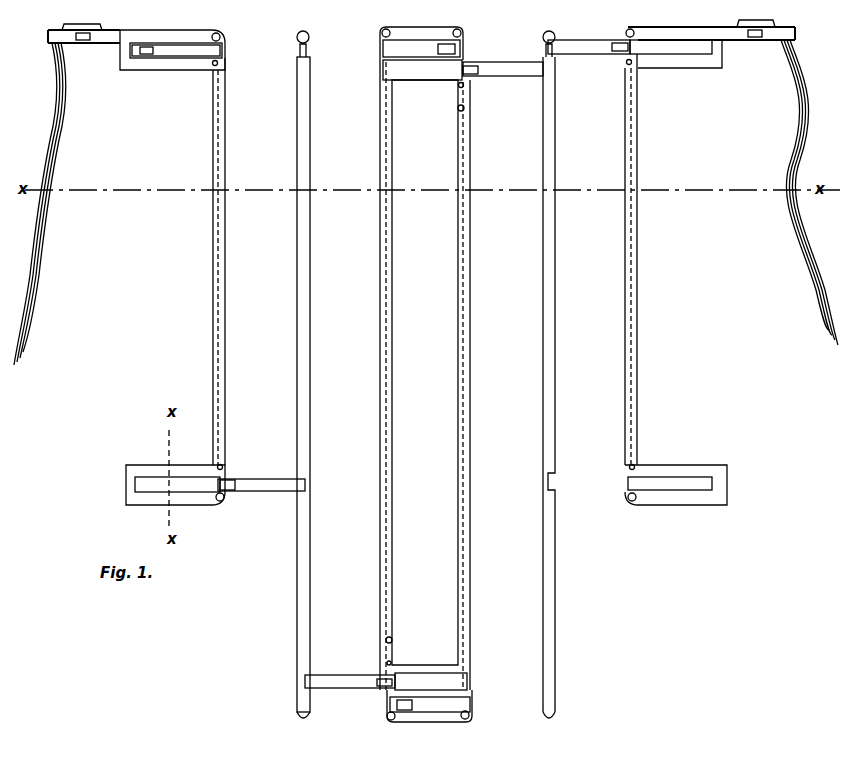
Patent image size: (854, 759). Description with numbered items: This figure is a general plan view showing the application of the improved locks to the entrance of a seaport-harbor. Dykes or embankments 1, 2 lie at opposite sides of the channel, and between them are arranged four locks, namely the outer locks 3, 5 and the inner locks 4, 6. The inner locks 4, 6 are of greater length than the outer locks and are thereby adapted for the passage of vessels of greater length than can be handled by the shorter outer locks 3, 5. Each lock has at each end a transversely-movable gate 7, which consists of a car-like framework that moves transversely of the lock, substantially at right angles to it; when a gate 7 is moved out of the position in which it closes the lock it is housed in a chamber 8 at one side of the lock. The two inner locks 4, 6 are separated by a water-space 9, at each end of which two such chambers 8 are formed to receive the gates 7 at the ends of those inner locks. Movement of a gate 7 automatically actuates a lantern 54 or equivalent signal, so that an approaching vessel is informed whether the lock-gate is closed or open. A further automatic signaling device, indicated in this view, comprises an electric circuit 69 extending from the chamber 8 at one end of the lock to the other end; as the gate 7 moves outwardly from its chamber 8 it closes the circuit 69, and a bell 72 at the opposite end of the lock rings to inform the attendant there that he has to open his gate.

The dyke 1 is at (82, 194).
The dyke 2 is at (733, 182).
The outer lock 3 is at (283, 374).
The inner lock 4 is at (345, 281).
The outer lock 5 is at (567, 374).
The inner lock 6 is at (443, 375).
The gate 7 is at (222, 50).
The chamber 8 is at (128, 50).
The water-space 9 is at (426, 458).
The lantern 54 is at (221, 36).
The electric circuit 69 is at (222, 372).
The bell 72 is at (219, 64).